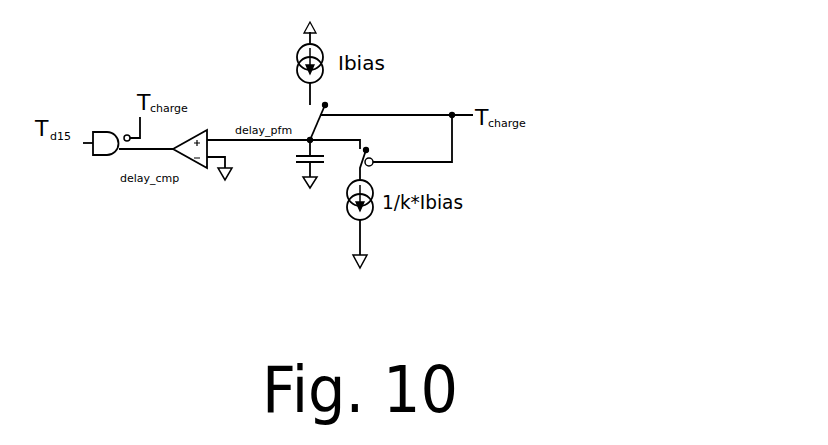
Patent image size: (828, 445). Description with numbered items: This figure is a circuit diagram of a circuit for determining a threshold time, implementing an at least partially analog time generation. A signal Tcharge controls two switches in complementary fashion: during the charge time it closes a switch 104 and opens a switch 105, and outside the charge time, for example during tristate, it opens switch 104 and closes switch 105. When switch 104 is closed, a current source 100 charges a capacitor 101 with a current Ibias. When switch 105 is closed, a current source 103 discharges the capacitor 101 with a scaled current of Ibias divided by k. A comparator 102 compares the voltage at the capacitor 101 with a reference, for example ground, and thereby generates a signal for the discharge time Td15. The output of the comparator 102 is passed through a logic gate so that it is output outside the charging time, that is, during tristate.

The current source 100 is at (295, 67).
The capacitor 101 is at (299, 163).
The comparator 102 is at (197, 163).
The current source 103 is at (352, 218).
The switch 104 is at (325, 105).
The switch 105 is at (366, 150).